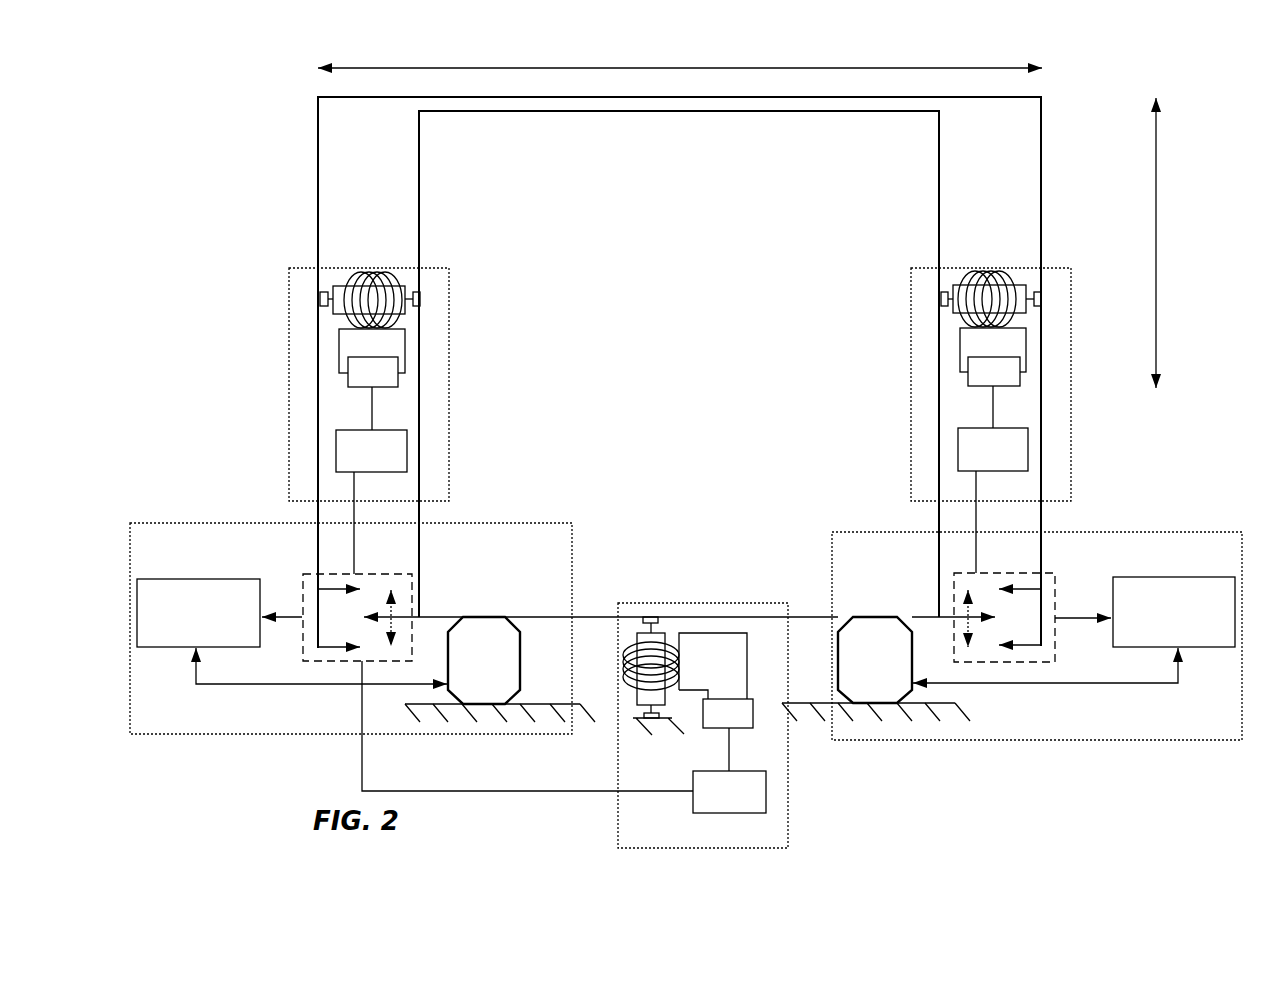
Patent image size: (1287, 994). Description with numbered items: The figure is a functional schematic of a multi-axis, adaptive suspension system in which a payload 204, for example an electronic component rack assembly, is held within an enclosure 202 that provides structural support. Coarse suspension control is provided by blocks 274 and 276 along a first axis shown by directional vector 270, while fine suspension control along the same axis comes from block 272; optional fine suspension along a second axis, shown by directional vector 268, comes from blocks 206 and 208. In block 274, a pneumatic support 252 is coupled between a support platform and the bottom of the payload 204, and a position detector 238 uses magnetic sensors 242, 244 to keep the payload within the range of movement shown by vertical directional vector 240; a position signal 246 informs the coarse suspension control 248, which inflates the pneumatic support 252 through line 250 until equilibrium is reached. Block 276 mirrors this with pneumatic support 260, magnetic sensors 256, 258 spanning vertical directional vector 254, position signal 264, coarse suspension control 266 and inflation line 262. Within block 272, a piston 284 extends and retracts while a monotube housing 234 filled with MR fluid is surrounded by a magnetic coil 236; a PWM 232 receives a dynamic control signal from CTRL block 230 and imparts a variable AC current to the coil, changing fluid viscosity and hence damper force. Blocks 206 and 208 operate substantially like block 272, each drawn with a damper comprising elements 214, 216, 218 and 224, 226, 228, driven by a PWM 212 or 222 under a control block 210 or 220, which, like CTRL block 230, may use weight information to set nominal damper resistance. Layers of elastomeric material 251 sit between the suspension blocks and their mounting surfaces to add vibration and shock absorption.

The enclosure 202 is at (318, 152).
The payload 204 is at (419, 168).
The fine suspension control block 206 is at (450, 315).
The fine suspension control block 208 is at (910, 385).
The control block 210 is at (368, 473).
The PWM driver 212 is at (367, 390).
The actuator end caps 214 is at (326, 291).
The actuator body 216 is at (340, 290).
The coil 218 is at (357, 272).
The control block 220 is at (992, 472).
The PWM driver 222 is at (988, 388).
The actuator end caps 224 is at (947, 292).
The actuator body 226 is at (966, 292).
The coil 228 is at (981, 272).
The CTRL block 230 is at (710, 813).
The PWM 232 is at (753, 708).
The monotube housing 234 is at (637, 633).
The magnetic coil 236 is at (623, 675).
The position sensor 238 is at (317, 575).
The vertical directional vector 240 is at (412, 612).
The magnetic sensor 242 is at (325, 591).
The magnetic sensor 244 is at (325, 647).
The position signal 246 is at (290, 618).
The coarse suspension control 248 is at (145, 578).
The line 250 is at (268, 683).
The elastomeric material 251 is at (420, 299).
The pneumatic support 252 is at (522, 685).
The vertical directional vector 254 is at (967, 613).
The magnetic sensor 256 is at (1030, 592).
The magnetic sensor 258 is at (1030, 645).
The pneumatic support 260 is at (837, 683).
The line 262 is at (1040, 686).
The position signal 264 is at (1078, 620).
The coarse suspension control 266 is at (1135, 577).
The directional vector 268 is at (433, 68).
The directional vector 270 is at (1157, 227).
The fine suspension control block 272 is at (682, 603).
The coarse suspension control block 274 is at (535, 523).
The coarse suspension control block 276 is at (862, 530).
The piston 284 is at (678, 716).